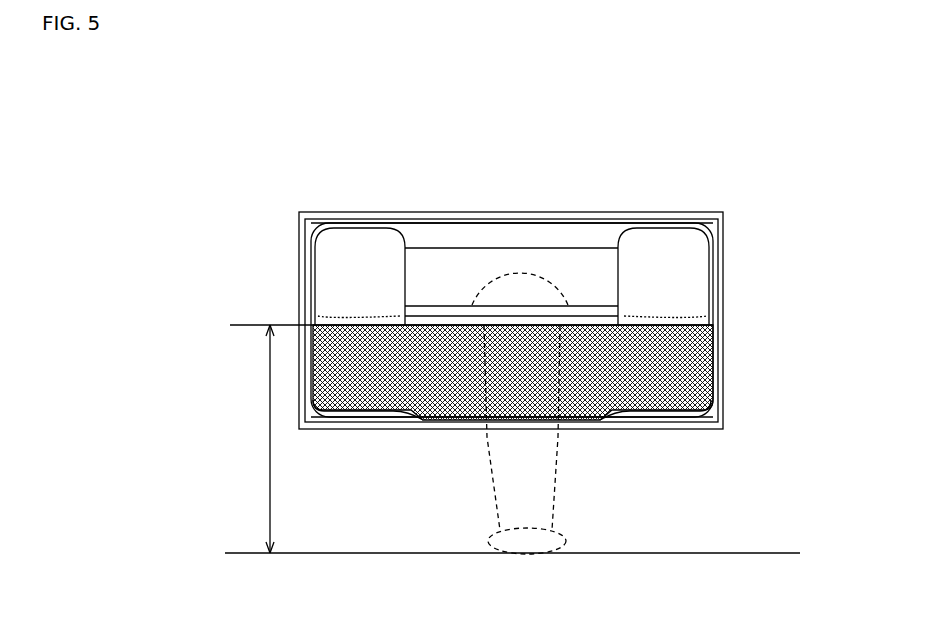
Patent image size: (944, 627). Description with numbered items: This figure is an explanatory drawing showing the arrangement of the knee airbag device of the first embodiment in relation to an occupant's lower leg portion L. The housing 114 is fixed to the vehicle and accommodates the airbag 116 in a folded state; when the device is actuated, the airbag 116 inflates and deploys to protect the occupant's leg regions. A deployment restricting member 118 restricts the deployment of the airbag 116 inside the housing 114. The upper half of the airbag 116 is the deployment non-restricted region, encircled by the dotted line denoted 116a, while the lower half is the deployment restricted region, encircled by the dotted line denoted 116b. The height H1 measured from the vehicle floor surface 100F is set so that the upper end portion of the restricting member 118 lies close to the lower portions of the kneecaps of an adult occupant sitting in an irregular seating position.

The vehicle floor surface 100F is at (350, 551).
The height H1 is at (269, 439).
The housing 114 is at (702, 432).
The airbag 116 is at (358, 236).
The deployment non-restricted region 116a is at (716, 228).
The deployment restricted region 116b is at (720, 428).
The deployment restricting member 118 is at (714, 351).
The occupant's lower leg portion L is at (547, 457).